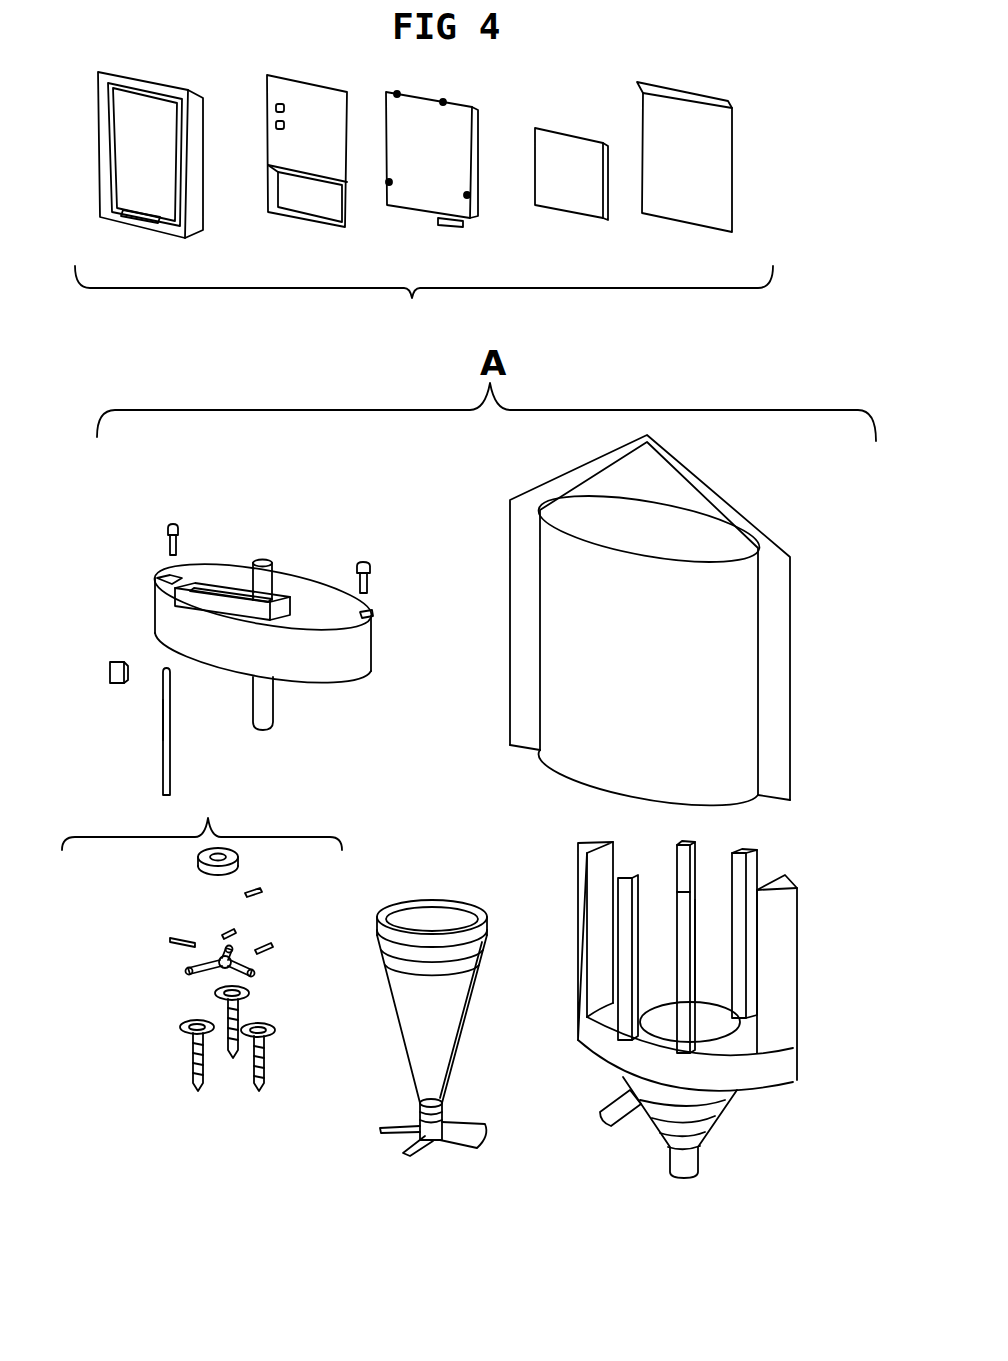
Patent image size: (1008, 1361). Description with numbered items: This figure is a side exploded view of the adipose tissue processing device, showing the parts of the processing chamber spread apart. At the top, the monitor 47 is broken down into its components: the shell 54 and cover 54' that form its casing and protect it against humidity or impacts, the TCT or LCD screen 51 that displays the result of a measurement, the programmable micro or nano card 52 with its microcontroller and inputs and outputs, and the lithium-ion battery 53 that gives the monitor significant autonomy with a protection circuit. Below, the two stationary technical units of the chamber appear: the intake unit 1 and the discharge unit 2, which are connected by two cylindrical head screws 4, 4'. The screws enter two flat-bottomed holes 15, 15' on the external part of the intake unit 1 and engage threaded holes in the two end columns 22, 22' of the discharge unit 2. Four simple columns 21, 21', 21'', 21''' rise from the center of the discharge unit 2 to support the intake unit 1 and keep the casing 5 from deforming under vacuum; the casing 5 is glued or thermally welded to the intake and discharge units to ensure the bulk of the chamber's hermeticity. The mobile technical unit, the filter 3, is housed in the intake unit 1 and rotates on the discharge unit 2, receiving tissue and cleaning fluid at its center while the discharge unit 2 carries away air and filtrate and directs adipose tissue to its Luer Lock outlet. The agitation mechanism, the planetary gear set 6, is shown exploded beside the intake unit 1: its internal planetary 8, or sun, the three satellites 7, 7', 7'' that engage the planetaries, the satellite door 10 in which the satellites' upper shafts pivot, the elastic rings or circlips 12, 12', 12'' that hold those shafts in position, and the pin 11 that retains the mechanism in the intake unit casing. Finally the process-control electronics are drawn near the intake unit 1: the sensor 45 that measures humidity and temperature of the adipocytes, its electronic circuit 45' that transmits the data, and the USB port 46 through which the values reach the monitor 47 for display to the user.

The shell 54 is at (150, 174).
The screen 51 is at (317, 196).
The programmable micro or nano card 52 is at (408, 198).
The lithium-ion battery 53 is at (572, 196).
The cover 54' is at (679, 178).
The monitor 47 is at (424, 206).
The screw 4 is at (191, 518).
The screw 4' is at (343, 547).
The hole with flat bottom 15 is at (142, 552).
The hole with flat bottom 15' is at (403, 597).
The intake unit 1 is at (315, 658).
The USB port 46 is at (108, 678).
The sensor 45 is at (109, 739).
The electronic circuit 45' is at (112, 725).
The planetary gear set 6 is at (202, 933).
The internal planetary 8 is at (197, 857).
The pin 11 is at (262, 891).
The elastic ring 12 is at (195, 908).
The elastic ring 12' is at (296, 925).
The elastic ring 12'' is at (149, 931).
The satellite door 10 is at (187, 970).
The satellite 7 is at (175, 1055).
The satellite 7' is at (273, 1021).
The satellite 7'' is at (280, 1059).
The filter 3 is at (425, 1067).
The casing 5 is at (530, 673).
The column 22 is at (556, 939).
The column 22' is at (810, 977).
The simple column 21 is at (661, 930).
The simple column 21' is at (789, 920).
The simple column 21'' is at (569, 957).
The simple column 21''' is at (788, 971).
The discharge unit 2 is at (682, 1120).